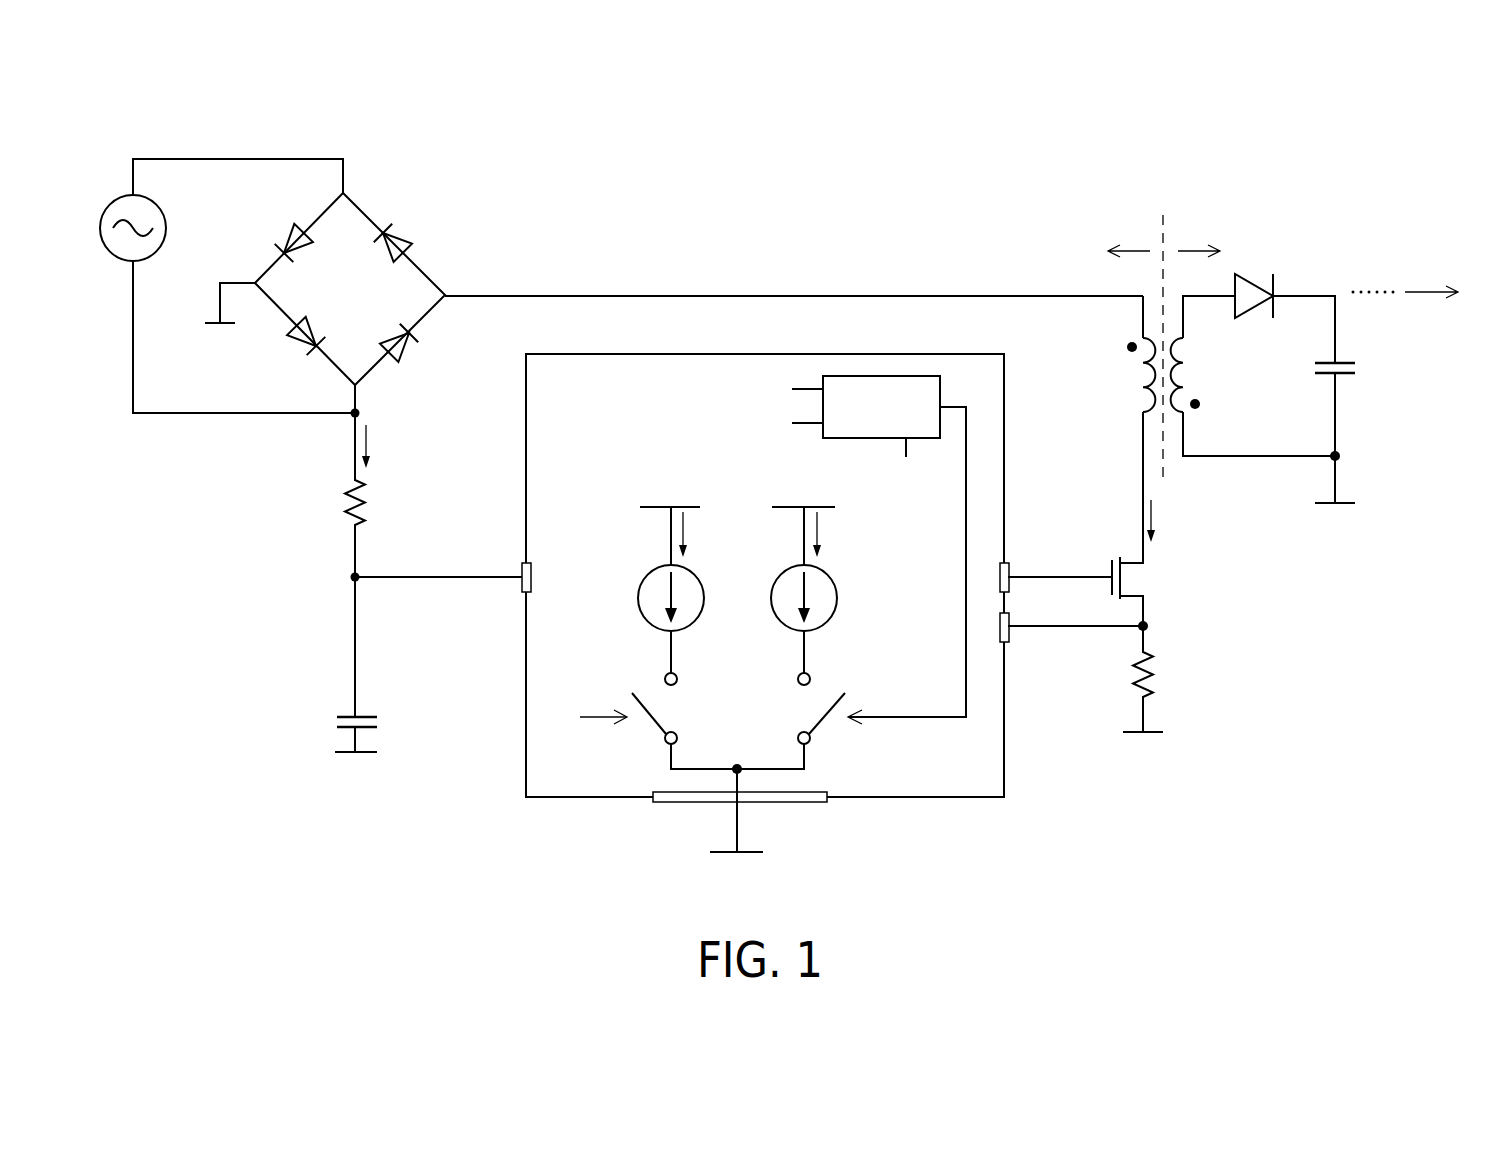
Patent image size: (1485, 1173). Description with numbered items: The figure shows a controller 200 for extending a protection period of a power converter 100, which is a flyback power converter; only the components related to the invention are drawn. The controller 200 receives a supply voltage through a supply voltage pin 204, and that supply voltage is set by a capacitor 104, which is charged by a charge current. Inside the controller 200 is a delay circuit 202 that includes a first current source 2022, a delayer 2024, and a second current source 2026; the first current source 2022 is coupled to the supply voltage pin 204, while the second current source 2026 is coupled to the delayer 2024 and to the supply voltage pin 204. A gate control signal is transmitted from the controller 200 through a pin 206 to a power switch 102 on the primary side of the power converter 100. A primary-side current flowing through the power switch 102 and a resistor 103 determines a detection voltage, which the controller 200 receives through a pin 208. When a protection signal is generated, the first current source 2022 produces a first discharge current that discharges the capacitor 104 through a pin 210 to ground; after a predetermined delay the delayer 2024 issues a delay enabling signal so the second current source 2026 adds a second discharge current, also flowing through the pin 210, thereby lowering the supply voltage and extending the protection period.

The power converter 100 is at (1292, 130).
The power switch 102 is at (1152, 579).
The resistor 103 is at (1152, 668).
The capacitor 104 is at (335, 720).
The controller 200 is at (890, 354).
The delay circuit 202 is at (1311, 782).
The first current source 2022 is at (702, 610).
The delayer 2024 is at (940, 383).
The second current source 2026 is at (835, 610).
The supply voltage pin 204 is at (521, 572).
The pin 206 is at (1009, 566).
The pin 208 is at (1009, 632).
The pin 210 is at (790, 802).